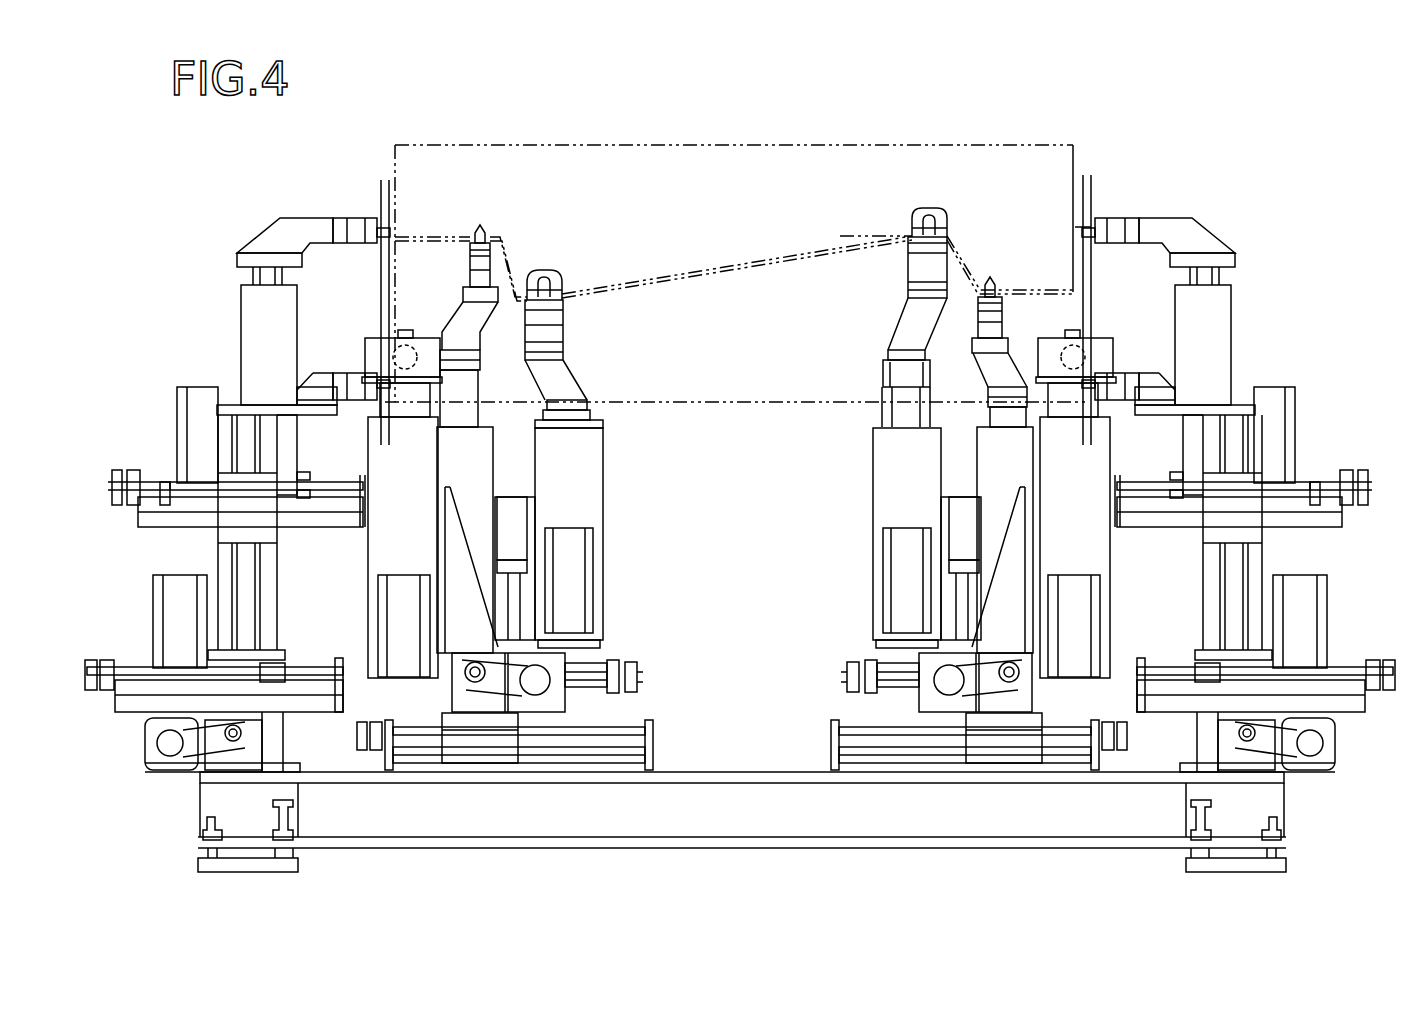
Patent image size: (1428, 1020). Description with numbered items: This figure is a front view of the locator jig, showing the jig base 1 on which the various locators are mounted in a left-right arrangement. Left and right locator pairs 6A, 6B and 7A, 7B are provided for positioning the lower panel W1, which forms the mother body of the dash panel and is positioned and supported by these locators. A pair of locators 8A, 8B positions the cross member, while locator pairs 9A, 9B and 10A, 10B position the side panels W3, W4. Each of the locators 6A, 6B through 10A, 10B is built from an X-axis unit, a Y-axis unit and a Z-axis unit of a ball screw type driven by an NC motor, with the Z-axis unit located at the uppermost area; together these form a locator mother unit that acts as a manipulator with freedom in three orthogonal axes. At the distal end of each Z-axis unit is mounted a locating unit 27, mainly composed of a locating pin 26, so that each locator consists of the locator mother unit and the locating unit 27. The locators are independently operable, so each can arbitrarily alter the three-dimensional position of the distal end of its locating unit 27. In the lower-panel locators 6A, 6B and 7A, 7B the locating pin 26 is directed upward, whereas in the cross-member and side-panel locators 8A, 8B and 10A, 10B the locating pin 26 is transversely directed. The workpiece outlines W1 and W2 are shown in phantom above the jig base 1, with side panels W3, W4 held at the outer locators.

The jig base 1 is at (690, 846).
The locator 6A is at (453, 318).
The locator 6B is at (593, 370).
The locator 7A is at (870, 434).
The locator 7B is at (975, 455).
The locator 8A is at (362, 603).
The locator 8B is at (1116, 599).
The locator 9A is at (203, 533).
The locator 9B is at (238, 302).
The locator 10A is at (1278, 556).
The locator 10B is at (1238, 322).
The locating pin 26 is at (335, 232).
The locating unit 27 is at (365, 216).
The lower panel W1 is at (687, 146).
The workpiece W2 is at (676, 406).
The side panel W3 is at (378, 296).
The side panel W4 is at (1100, 294).